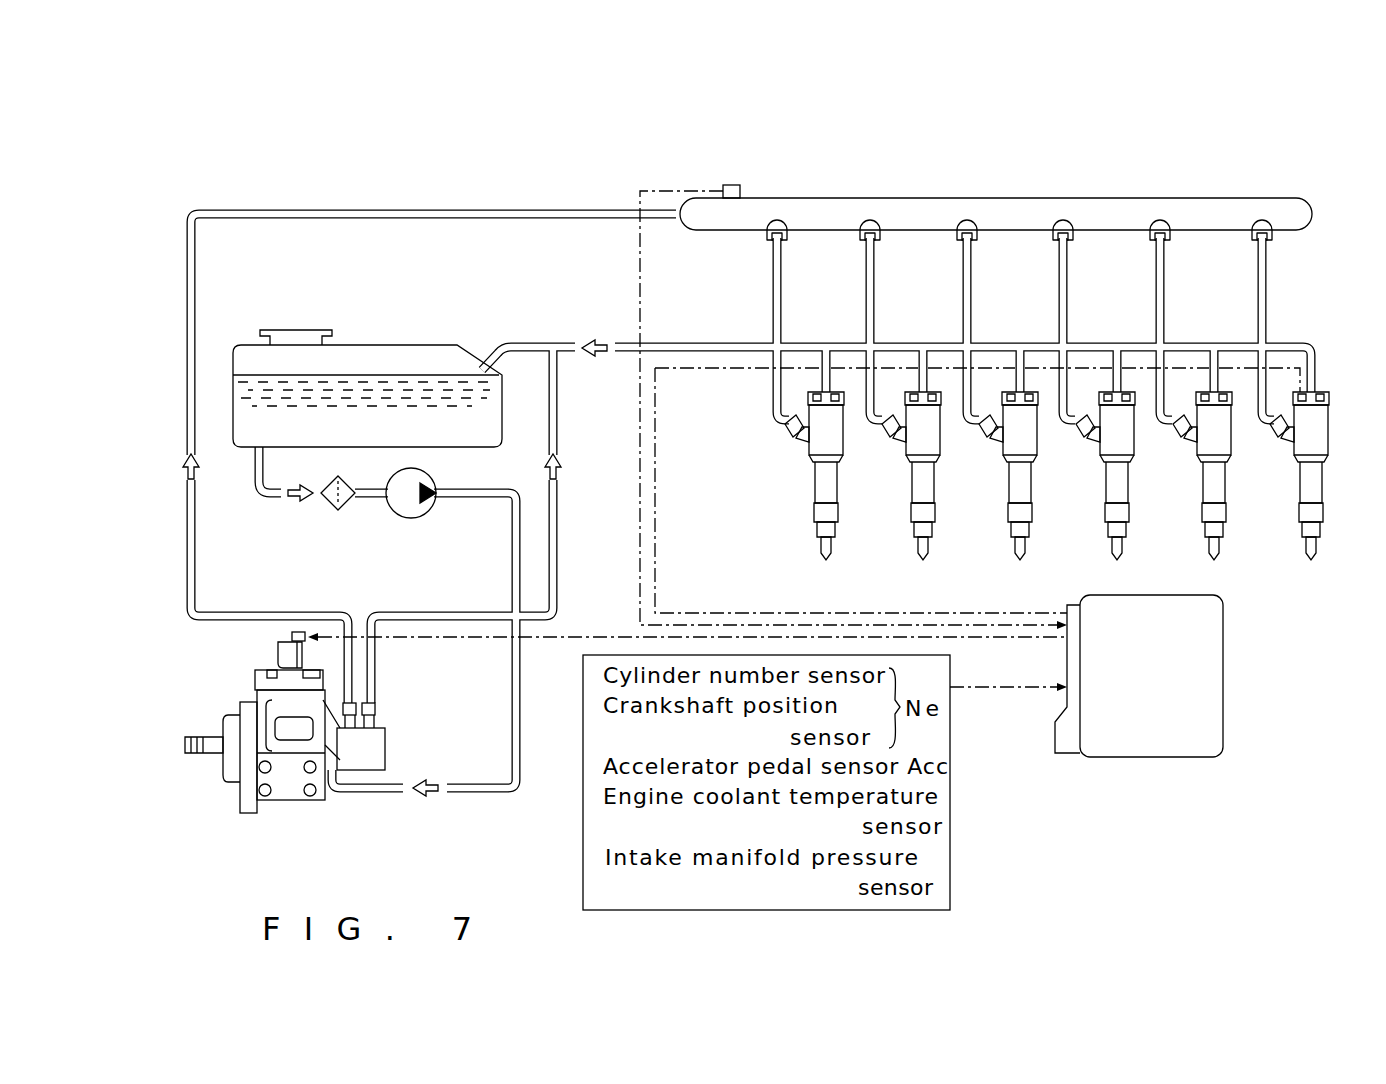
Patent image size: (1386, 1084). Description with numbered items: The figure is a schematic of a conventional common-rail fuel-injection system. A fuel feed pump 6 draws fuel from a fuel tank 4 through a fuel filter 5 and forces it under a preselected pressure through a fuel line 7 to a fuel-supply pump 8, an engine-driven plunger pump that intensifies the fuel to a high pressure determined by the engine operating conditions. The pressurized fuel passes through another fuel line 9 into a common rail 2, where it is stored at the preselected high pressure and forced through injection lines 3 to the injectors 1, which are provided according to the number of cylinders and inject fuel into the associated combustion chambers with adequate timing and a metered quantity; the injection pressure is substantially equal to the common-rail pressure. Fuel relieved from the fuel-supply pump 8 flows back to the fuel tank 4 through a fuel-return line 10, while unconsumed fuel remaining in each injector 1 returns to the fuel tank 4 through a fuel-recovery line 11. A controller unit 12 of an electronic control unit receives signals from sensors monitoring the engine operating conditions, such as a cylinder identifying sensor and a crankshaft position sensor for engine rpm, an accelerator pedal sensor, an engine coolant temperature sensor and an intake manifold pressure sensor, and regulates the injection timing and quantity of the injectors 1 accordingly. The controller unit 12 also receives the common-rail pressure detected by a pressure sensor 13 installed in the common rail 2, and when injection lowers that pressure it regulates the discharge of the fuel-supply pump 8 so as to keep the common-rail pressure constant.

The injectors 1 is at (839, 487).
The common rail 2 is at (1013, 217).
The injection lines 3 is at (781, 300).
The fuel tank 4 is at (413, 352).
The fuel filter 5 is at (330, 506).
The fuel feed pump 6 is at (404, 518).
The fuel line 7 is at (510, 712).
The fuel-supply pump 8 is at (288, 792).
The fuel line 9 is at (195, 527).
The fuel-return line 10 is at (557, 523).
The fuel-recovery line 11 is at (689, 347).
The controller unit 12 is at (1205, 683).
The pressure sensor 13 is at (733, 183).